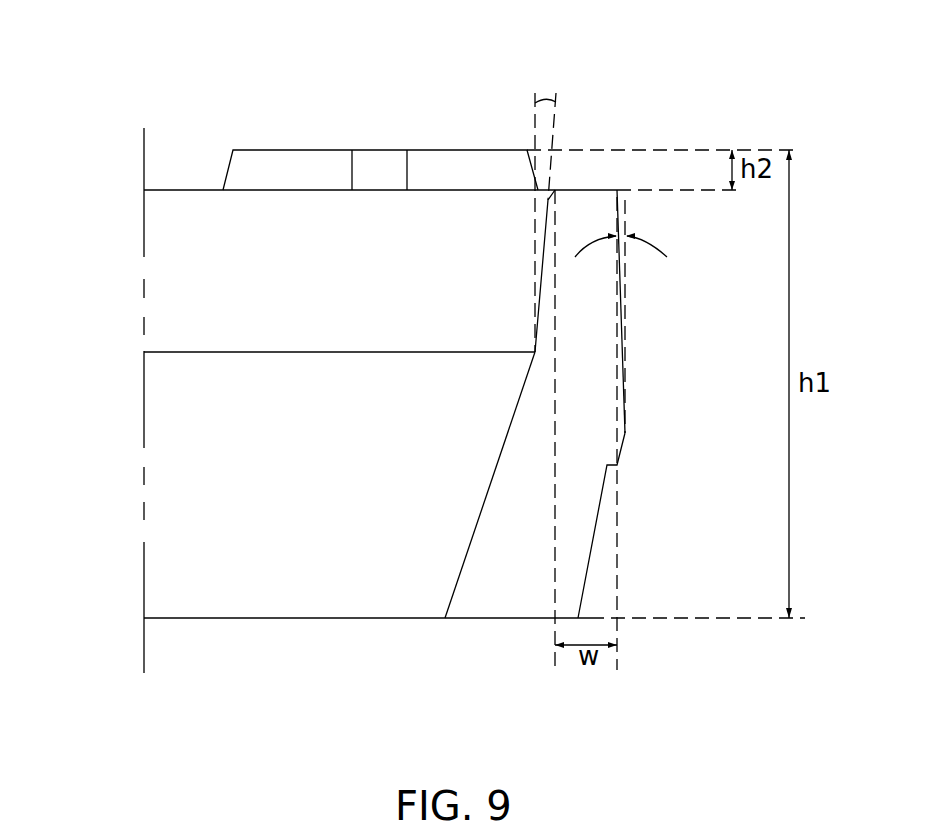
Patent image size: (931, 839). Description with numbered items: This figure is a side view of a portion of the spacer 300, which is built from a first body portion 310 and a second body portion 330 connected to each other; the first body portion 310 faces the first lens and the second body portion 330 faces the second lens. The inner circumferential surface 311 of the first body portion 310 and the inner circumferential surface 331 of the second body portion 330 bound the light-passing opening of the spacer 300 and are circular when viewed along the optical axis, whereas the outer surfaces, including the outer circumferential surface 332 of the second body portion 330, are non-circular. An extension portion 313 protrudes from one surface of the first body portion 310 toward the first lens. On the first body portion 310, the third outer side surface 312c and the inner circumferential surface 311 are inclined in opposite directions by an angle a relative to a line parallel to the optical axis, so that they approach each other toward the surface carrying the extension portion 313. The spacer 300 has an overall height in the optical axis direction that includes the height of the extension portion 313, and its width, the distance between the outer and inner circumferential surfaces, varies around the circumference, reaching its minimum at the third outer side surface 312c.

The spacer 300 is at (189, 103).
The first body portion 310 is at (187, 283).
The inner circumferential surface 311 is at (537, 262).
The third outer side surface 312c is at (620, 293).
The extension portion 313 is at (303, 167).
The second body portion 330 is at (186, 507).
The inner circumferential surface 331 is at (462, 557).
The outer circumferential surface 332 is at (588, 570).